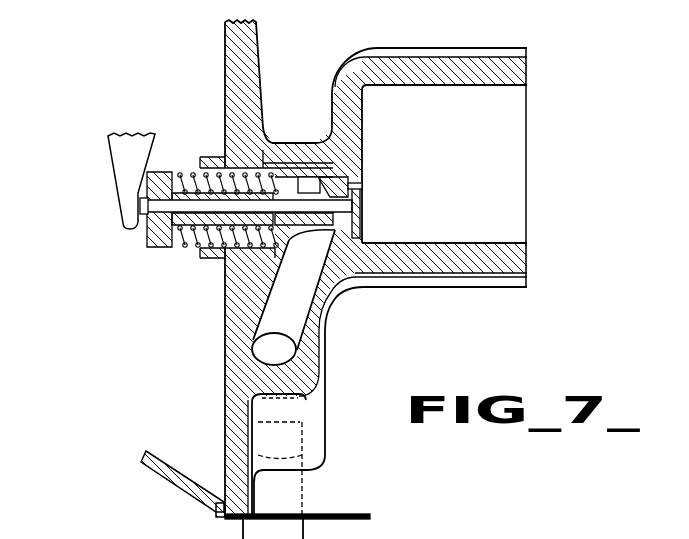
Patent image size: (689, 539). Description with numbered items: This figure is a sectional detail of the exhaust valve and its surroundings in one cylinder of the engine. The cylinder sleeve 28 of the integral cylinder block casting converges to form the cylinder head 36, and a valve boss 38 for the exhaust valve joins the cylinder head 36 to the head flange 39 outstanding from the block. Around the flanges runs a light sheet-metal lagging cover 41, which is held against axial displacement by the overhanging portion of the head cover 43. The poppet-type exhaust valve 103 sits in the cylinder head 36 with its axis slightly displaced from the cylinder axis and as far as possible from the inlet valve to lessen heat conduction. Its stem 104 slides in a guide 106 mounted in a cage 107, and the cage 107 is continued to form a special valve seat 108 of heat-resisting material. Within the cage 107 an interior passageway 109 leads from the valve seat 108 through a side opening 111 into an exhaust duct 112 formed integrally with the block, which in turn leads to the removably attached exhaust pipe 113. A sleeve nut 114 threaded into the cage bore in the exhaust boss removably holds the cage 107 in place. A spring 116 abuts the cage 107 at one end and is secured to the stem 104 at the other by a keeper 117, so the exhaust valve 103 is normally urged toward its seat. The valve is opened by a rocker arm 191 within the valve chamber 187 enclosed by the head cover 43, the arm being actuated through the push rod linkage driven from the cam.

The cylinder sleeve 28 is at (527, 75).
The cylinder head 36 is at (335, 90).
The valve boss 38 is at (268, 142).
The head flange 39 is at (258, 50).
The lagging cover 41 is at (330, 515).
The head cover 43 is at (205, 497).
The exhaust valve 103 is at (360, 206).
The stem 104 is at (196, 242).
The guide 106 is at (283, 160).
The cage 107 is at (311, 160).
The valve seat 108 is at (352, 184).
The interior passageway 109 is at (338, 224).
The side opening 111 is at (300, 243).
The exhaust duct 112 is at (300, 323).
The exhaust pipe 113 is at (303, 481).
The sleeve nut 114 is at (205, 157).
The spring 116 is at (170, 173).
The keeper 117 is at (152, 246).
The valve chamber 187 is at (208, 475).
The rocker arm 191 is at (121, 163).